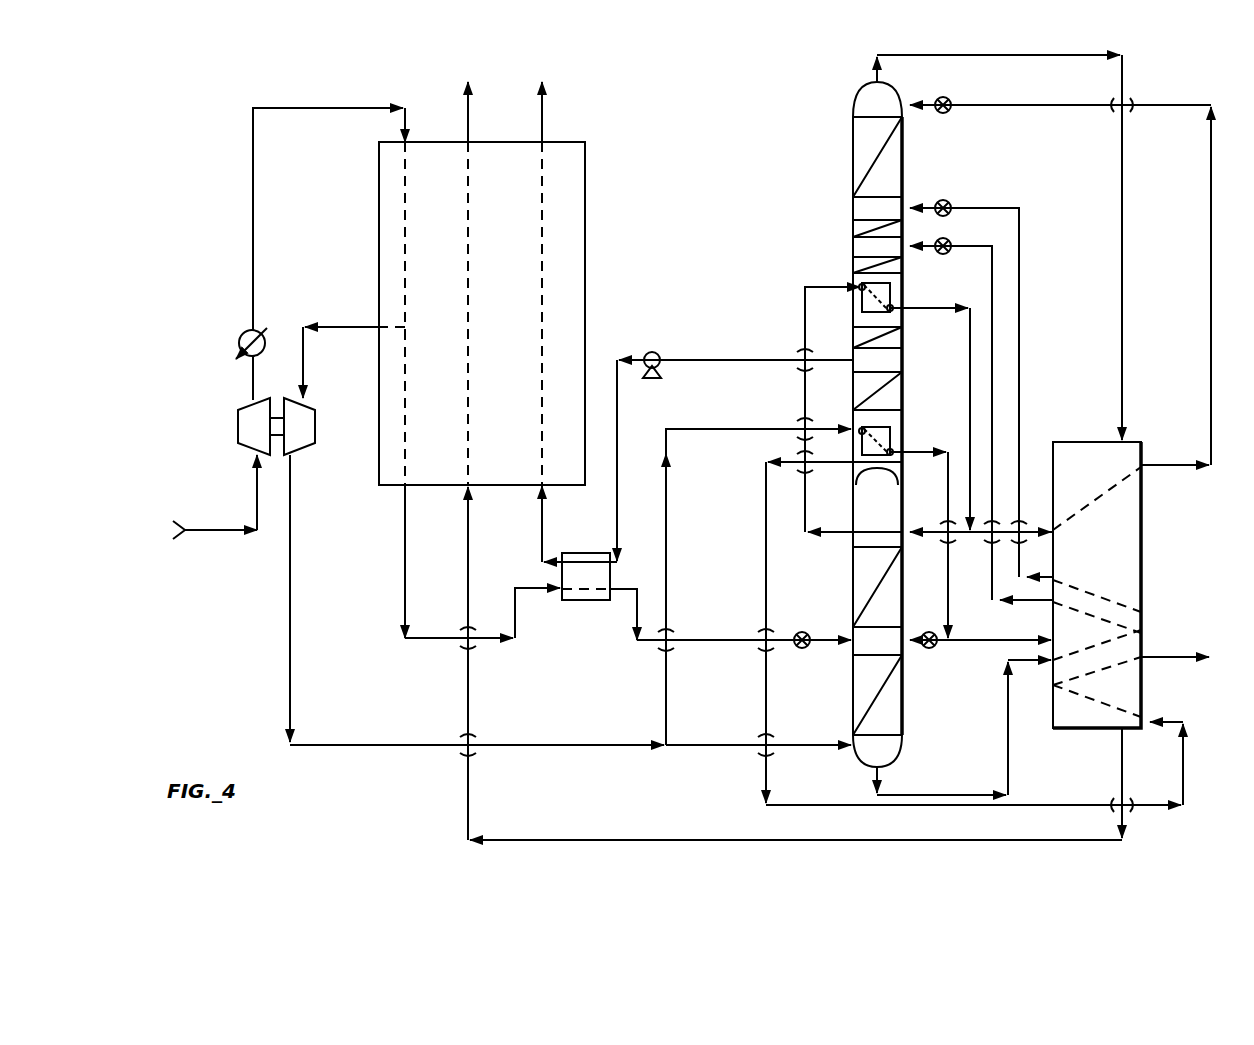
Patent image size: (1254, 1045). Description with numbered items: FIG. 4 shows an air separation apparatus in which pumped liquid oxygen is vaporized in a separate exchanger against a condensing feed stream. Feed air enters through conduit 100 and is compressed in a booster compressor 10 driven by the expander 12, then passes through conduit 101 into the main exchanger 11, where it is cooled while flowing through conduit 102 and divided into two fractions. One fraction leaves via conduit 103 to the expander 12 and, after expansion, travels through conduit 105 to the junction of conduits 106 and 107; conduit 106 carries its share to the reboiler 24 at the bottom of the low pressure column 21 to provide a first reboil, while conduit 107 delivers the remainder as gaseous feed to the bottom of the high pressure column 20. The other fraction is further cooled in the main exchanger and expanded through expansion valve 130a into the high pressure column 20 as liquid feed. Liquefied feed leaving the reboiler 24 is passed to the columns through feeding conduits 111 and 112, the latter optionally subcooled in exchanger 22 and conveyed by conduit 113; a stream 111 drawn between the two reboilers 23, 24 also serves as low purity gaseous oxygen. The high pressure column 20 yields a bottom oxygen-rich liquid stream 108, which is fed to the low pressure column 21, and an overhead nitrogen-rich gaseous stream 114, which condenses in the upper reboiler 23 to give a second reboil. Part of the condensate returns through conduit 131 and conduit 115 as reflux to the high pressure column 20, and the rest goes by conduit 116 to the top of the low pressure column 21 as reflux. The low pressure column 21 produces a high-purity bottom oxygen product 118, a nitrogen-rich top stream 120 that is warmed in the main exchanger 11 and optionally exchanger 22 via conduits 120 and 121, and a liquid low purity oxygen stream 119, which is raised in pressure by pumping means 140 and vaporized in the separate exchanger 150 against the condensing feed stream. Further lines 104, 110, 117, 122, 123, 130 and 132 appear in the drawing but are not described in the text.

The booster compressor 10 is at (240, 430).
The main exchanger 11 is at (585, 258).
The expander 12 is at (313, 428).
The high pressure column 20 is at (905, 706).
The low pressure distillation column 21 is at (905, 165).
The exchanger 22 is at (1143, 548).
The upper reboiler 23 is at (895, 287).
The reboiler 24 is at (893, 432).
The conduit 100 is at (219, 532).
The conduit 101 is at (253, 197).
The conduit 102 is at (405, 280).
The conduit 103 is at (347, 325).
The air passage in heat exchanger 104 is at (405, 390).
The conduit 105 is at (528, 746).
The conduit 106 is at (666, 705).
The conduit 107 is at (700, 748).
The oxygen-rich liquid stream 108 is at (932, 795).
The condensate line 110 is at (948, 612).
The feeding conduit 111 is at (935, 648).
The feeding conduit 112 is at (978, 644).
The conduit 113 is at (1019, 318).
The nitrogen-rich gaseous stream 114 is at (818, 540).
The conduit 115 is at (924, 538).
The conduit 116 is at (1033, 530).
The nitrogen return line 117 is at (1208, 282).
The bottom stream oxygen product 118 is at (766, 535).
The low purity oxygen stream 119 is at (728, 357).
The top stream 120 is at (977, 56).
The conduit 121 is at (588, 840).
The low pressure nitrogen product line 122 is at (470, 130).
The low pressure oxygen product line 123 is at (545, 130).
The cooled air line 130 is at (427, 638).
The expansion valve 130a is at (818, 612).
The conduit 131 is at (690, 640).
The return line to heat exchanger 132 is at (538, 532).
The pumping means 140 is at (650, 378).
The separate exchanger 150 is at (588, 601).